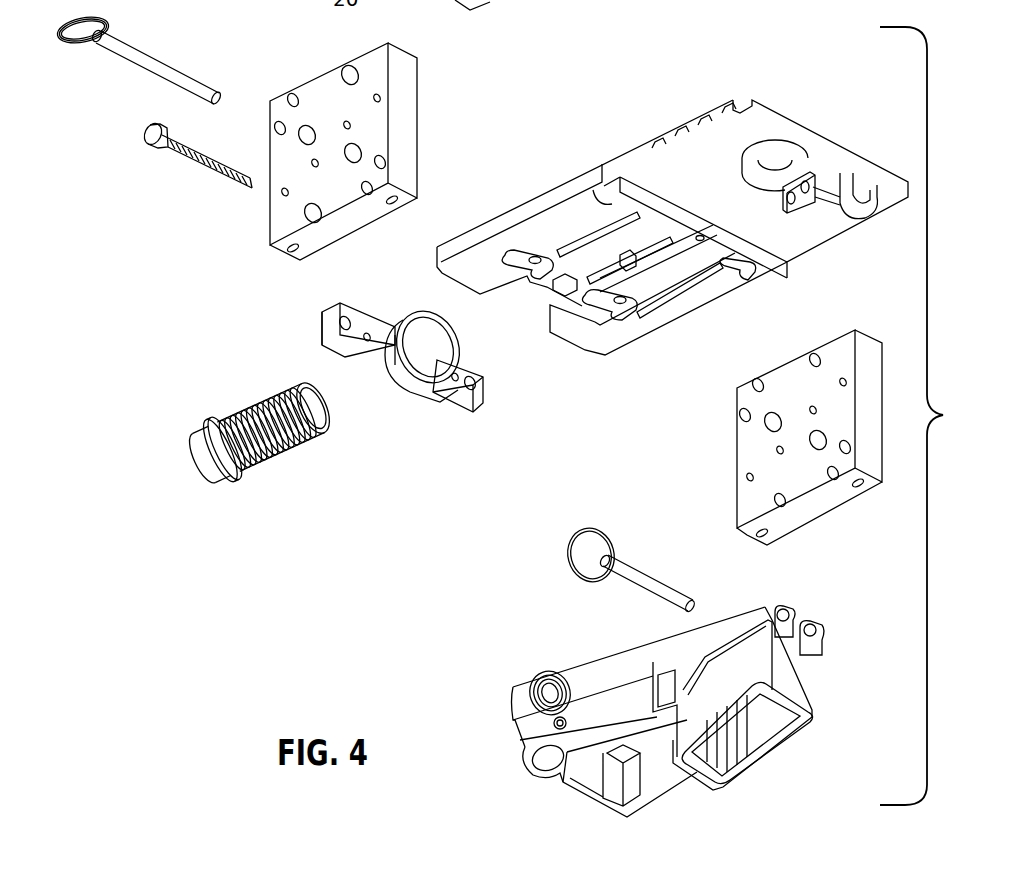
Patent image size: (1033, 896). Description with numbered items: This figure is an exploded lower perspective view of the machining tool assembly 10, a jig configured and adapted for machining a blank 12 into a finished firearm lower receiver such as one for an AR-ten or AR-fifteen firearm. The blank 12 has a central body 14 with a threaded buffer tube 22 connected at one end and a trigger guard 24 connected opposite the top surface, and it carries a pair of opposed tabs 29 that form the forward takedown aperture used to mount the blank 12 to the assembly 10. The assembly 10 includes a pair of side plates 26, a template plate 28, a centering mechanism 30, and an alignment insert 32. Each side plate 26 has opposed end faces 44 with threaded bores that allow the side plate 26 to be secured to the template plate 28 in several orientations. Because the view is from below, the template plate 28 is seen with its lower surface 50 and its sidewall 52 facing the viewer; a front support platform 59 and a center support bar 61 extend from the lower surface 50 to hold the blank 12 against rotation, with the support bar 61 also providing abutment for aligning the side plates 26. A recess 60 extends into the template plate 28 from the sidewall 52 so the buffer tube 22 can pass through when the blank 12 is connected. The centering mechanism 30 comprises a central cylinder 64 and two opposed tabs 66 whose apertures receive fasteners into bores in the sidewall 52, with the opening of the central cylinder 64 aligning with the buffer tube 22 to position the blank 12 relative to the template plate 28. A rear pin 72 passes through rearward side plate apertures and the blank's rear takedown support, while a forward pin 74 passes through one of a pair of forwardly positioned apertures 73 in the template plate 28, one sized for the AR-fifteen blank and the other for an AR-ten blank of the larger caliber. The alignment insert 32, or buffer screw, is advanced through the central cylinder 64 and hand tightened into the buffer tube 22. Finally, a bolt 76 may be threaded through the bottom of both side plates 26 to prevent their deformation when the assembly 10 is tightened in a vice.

The machining tool assembly 10 is at (927, 416).
The blank 12 is at (783, 760).
The central body 14 is at (612, 692).
The buffer tube 22 is at (523, 687).
The trigger guard 24 is at (673, 797).
The side plate 26 is at (733, 452).
The template plate 28 is at (610, 160).
The tabs 29 is at (784, 610).
The centering mechanism 30 is at (437, 412).
The alignment insert 32 is at (238, 488).
The end faces 44 is at (506, 13).
The lower surface 50 is at (663, 313).
The sidewall 52 is at (518, 210).
The front support platform 59 is at (770, 167).
The recess 60 is at (538, 300).
The center support bar 61 is at (595, 205).
The central cylinder 64 is at (402, 383).
The tabs 66 is at (343, 353).
The rear pin 72 is at (157, 62).
The forwardly positioned apertures 73 is at (805, 190).
The forward pin 74 is at (647, 572).
The bolt 76 is at (494, 2).